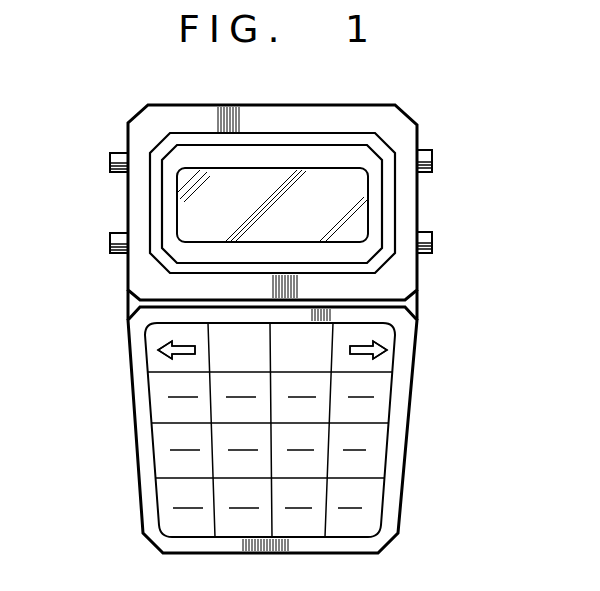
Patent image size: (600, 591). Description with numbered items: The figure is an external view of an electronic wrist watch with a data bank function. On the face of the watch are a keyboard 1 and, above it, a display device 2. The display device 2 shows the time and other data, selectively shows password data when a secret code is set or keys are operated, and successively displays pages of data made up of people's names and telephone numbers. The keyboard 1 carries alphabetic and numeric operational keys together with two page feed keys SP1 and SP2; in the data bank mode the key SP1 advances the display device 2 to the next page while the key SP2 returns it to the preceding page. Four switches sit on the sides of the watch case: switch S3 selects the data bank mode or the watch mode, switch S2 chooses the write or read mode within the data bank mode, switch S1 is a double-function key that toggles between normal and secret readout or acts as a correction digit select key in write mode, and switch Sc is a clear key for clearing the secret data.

The keyboard 1 is at (399, 421).
The display device 2 is at (188, 203).
The switch S1 is at (441, 243).
The switch S2 is at (103, 163).
The switch S3 is at (103, 243).
The switch Sc is at (440, 163).
The page feed key SP1 is at (383, 336).
The page feed key SP2 is at (157, 345).